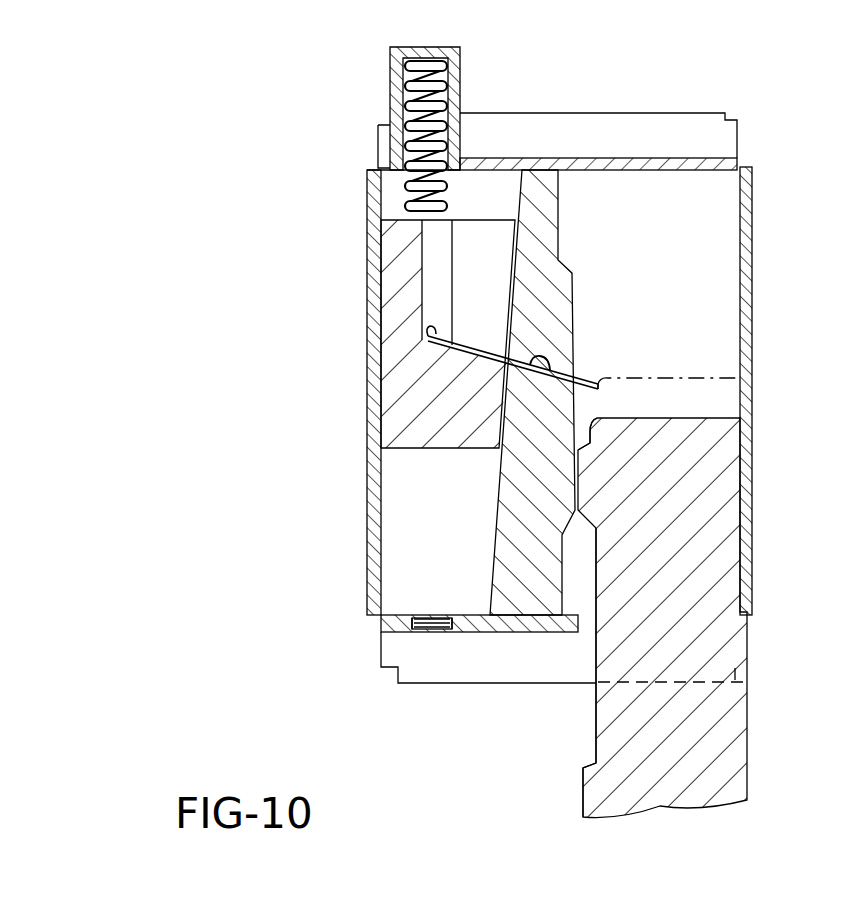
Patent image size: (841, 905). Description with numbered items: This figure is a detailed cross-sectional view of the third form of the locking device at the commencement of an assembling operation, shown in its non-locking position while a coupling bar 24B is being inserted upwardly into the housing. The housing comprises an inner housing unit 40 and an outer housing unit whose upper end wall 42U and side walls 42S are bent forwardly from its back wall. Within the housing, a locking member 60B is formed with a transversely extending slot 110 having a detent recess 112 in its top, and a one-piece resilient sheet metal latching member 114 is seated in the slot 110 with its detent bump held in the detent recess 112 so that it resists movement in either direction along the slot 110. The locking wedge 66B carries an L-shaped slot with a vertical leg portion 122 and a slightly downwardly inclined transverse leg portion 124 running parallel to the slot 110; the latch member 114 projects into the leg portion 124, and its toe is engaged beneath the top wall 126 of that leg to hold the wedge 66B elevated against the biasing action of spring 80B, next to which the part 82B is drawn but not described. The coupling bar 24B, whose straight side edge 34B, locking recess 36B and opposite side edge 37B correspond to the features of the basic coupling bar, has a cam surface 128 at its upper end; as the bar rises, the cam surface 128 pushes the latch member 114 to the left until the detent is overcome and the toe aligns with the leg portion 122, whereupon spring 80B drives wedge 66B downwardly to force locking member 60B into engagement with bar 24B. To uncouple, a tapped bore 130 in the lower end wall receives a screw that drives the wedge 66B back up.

The spring 80B is at (390, 97).
The spring housing 82B is at (462, 67).
The upper end wall 42U is at (604, 155).
The side walls 42S is at (367, 330).
The vertical leg portion 122 is at (437, 233).
The top wall 126 is at (466, 345).
The locking member 60B is at (566, 278).
The detent recess 112 is at (580, 356).
The latching member 114 is at (622, 376).
The cam surface 128 is at (600, 425).
The transverse leg portion 124 is at (427, 345).
The locking wedge 66B is at (388, 380).
The slot 110 is at (540, 388).
The tapped bore 130 is at (418, 622).
The inner housing unit 40 is at (504, 660).
The stem 36B is at (597, 740).
The latch body 34B is at (748, 752).
The end portion 37B is at (583, 797).
The coupling bar 24B is at (743, 637).